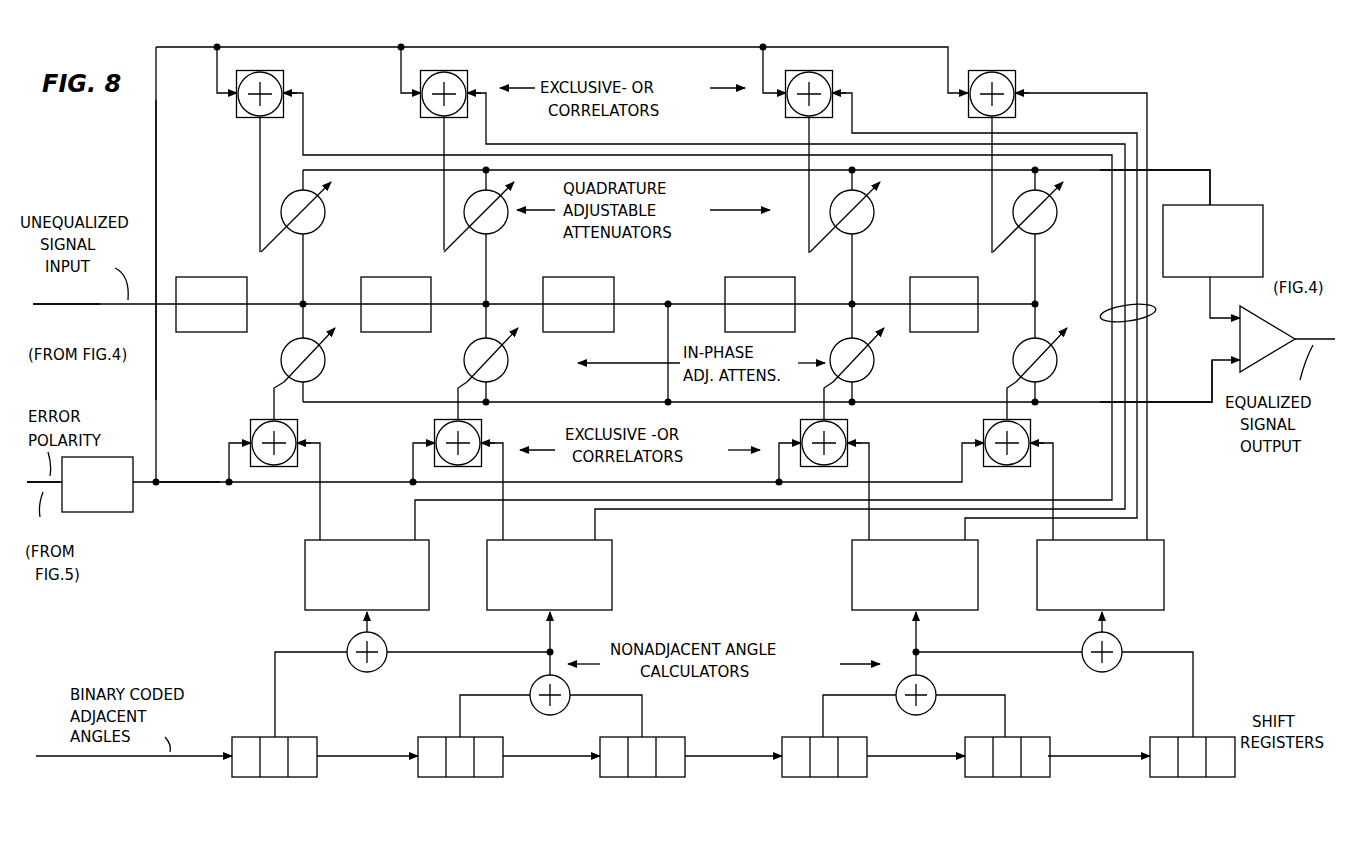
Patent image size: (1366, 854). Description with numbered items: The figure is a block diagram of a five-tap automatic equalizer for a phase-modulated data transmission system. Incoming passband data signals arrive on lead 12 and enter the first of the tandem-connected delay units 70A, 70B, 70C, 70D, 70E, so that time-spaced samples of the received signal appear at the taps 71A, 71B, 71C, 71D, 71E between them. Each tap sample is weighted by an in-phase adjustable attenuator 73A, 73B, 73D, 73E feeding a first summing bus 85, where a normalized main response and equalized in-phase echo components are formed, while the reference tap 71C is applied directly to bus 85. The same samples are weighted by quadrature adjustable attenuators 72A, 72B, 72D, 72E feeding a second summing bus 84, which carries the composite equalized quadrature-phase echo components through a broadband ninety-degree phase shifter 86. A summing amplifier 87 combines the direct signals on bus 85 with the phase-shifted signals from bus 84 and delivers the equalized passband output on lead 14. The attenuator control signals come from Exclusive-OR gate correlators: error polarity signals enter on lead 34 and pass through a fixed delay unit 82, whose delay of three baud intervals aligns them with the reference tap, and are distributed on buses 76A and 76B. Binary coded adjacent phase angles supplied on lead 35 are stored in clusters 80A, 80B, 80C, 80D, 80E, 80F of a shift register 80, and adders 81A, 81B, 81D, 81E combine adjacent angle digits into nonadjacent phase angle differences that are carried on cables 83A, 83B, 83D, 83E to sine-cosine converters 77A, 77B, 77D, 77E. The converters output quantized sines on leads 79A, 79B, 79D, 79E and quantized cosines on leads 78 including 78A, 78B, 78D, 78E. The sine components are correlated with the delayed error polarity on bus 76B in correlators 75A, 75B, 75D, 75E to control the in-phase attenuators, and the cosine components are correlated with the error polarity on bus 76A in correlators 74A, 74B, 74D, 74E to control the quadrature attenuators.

The lead 12 is at (40, 310).
The lead 14 is at (1330, 336).
The lead 34 is at (43, 511).
The binary coded adjacent angles input 35 is at (80, 757).
The first delay unit 70A is at (210, 276).
The delay unit 70B is at (371, 276).
The delay unit 70C is at (614, 276).
The delay unit 70D is at (777, 276).
The delay unit 70E is at (928, 276).
The tap 71A is at (298, 300).
The tap 71B is at (483, 300).
The reference tap 71C is at (668, 303).
The tap 71D is at (855, 302).
The tap 71E is at (1040, 302).
The quadrature adjustable attenuator 72A is at (322, 228).
The quadrature adjustable attenuator 72B is at (503, 232).
The quadrature adjustable attenuator 72D is at (870, 230).
The quadrature adjustable attenuator 72E is at (1055, 232).
The in-phase adjustable attenuator 73A is at (330, 368).
The in-phase adjustable attenuator 73B is at (510, 368).
The in-phase adjustable attenuator 73D is at (876, 366).
The in-phase adjustable attenuator 73E is at (1052, 366).
The Exclusive-OR gate correlator 74A is at (285, 84).
The Exclusive-OR gate correlator 74B is at (468, 84).
The Exclusive-OR gate correlator 74D is at (835, 84).
The Exclusive-OR gate correlator 74E is at (1015, 84).
The Exclusive-OR gate correlator 75A is at (300, 433).
The Exclusive-OR gate correlator 75B is at (483, 433).
The Exclusive-OR gate correlator 75D is at (850, 433).
The Exclusive-OR gate correlator 75E is at (1032, 433).
The bus 76A is at (158, 420).
The bus 76B is at (172, 488).
The sine-cosine converter 77A is at (305, 573).
The sine-cosine converter 77B is at (487, 562).
The sine-cosine converter 77D is at (852, 573).
The sine-cosine converter 77E is at (1037, 562).
The leads 78 is at (1148, 308).
The lead 78A is at (416, 528).
The lead 78B is at (596, 530).
The lead 78D is at (967, 534).
The lead 78E is at (1149, 527).
The lead 79A is at (321, 528).
The lead 79B is at (504, 528).
The lead 79D is at (870, 530).
The lead 79E is at (1054, 530).
The shift register 80 is at (1172, 765).
The cluster 80A is at (308, 779).
The cluster 80B is at (492, 779).
The cluster 80C is at (672, 779).
The cluster 80D is at (862, 779).
The cluster 80E is at (1042, 779).
The cluster 80F is at (1230, 779).
The adder 81A is at (367, 676).
The adder 81B is at (553, 717).
The adder 81D is at (919, 717).
The adder 81E is at (1104, 676).
The fixed delay unit 82 is at (120, 514).
The cable 83A is at (372, 618).
The cable 83B is at (556, 632).
The cable 83D is at (922, 632).
The cable 83E is at (1108, 620).
The second summing bus 84 is at (1192, 163).
The first summing bus 85 is at (1170, 405).
The broadband 90° phase shifter 86 is at (1257, 205).
The summing amplifier 87 is at (1237, 345).